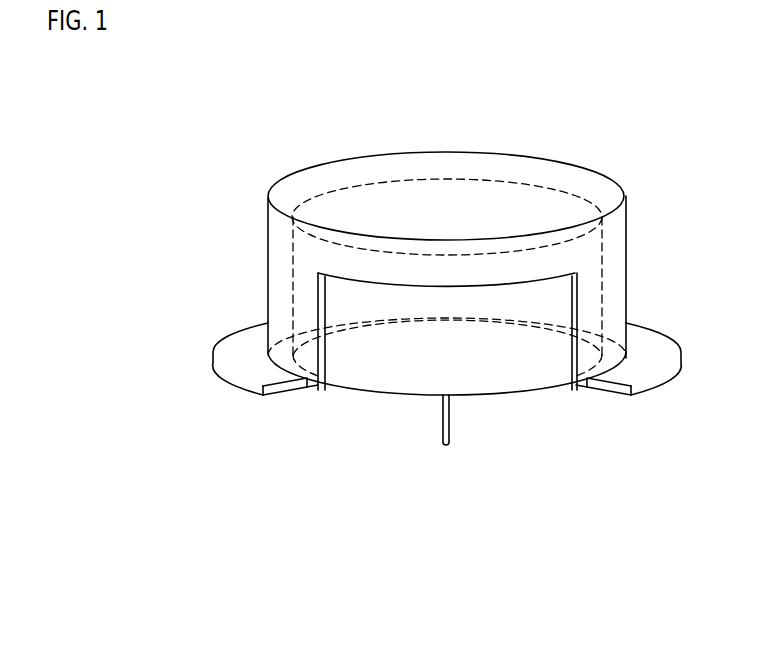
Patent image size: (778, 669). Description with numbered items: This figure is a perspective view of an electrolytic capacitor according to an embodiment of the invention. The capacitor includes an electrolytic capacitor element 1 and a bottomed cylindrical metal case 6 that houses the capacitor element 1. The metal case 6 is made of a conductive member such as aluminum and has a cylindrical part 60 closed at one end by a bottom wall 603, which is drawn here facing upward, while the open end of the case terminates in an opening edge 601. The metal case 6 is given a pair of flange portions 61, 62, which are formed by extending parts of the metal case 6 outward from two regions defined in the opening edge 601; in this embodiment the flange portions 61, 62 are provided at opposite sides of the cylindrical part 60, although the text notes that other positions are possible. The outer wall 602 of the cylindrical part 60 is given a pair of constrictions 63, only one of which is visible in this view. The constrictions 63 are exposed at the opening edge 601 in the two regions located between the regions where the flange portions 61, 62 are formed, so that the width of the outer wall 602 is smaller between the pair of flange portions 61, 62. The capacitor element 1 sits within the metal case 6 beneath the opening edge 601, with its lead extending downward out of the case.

The electrolytic capacitor element 1 is at (373, 382).
The metal case 6 is at (297, 157).
The cylindrical part 60 is at (628, 218).
The flange portion 61 is at (252, 373).
The flange portion 62 is at (647, 368).
The constriction 63 is at (454, 299).
The opening edge 601 is at (580, 392).
The outer wall 602 is at (610, 283).
The bottom wall 603 is at (556, 173).